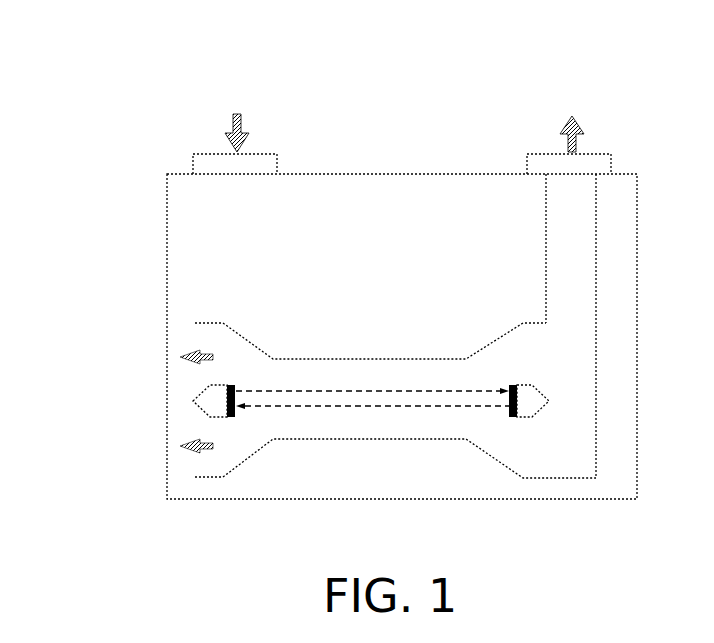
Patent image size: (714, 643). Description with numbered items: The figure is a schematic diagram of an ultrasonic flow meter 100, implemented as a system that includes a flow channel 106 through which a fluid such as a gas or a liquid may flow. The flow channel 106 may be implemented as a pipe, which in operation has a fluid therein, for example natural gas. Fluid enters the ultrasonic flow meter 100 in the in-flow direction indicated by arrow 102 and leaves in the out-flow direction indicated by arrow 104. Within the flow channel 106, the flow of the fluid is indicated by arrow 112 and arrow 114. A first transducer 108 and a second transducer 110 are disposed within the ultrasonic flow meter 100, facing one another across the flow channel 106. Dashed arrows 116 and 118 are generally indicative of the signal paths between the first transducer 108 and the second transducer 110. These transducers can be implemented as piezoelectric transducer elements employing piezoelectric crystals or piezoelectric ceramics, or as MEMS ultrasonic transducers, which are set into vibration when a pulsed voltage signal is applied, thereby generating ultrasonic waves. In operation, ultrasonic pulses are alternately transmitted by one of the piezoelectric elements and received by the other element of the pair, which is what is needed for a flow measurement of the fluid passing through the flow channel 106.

The ultrasonic flow meter 100 is at (84, 112).
The arrow 102 is at (243, 137).
The arrow 104 is at (578, 137).
The flow channel 106 is at (565, 368).
The first transducer 108 is at (208, 409).
The second transducer 110 is at (526, 417).
The arrow 112 is at (197, 358).
The arrow 114 is at (190, 447).
The dashed arrow 116 is at (347, 392).
The dashed arrow 118 is at (412, 404).